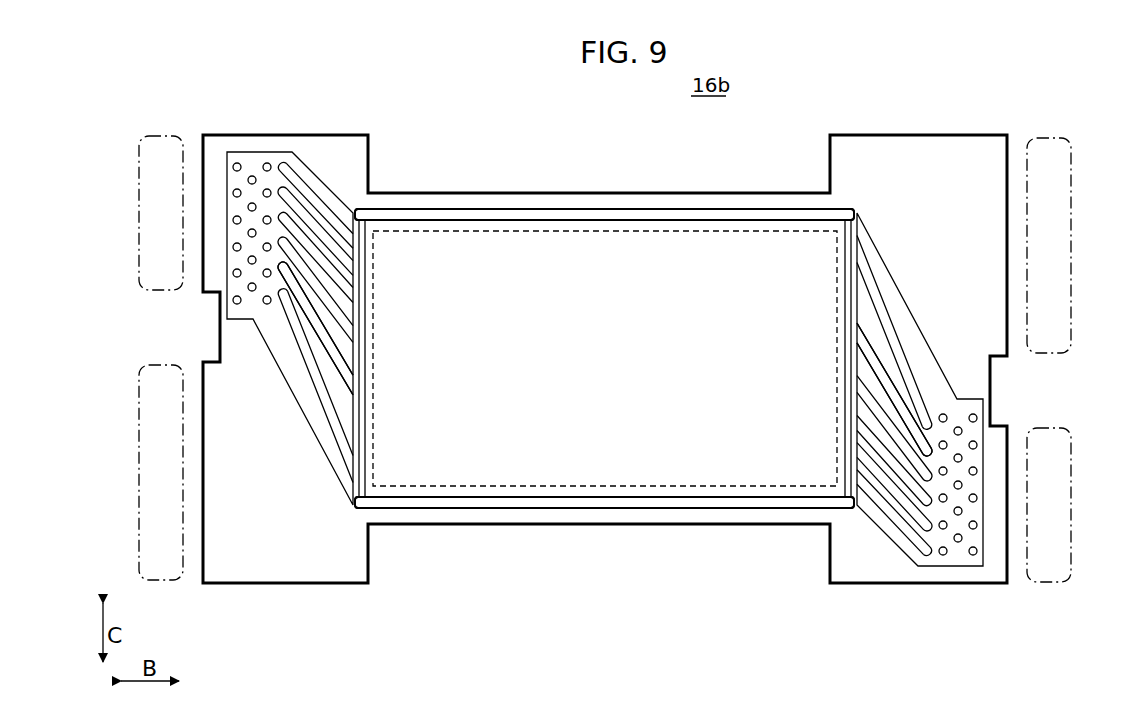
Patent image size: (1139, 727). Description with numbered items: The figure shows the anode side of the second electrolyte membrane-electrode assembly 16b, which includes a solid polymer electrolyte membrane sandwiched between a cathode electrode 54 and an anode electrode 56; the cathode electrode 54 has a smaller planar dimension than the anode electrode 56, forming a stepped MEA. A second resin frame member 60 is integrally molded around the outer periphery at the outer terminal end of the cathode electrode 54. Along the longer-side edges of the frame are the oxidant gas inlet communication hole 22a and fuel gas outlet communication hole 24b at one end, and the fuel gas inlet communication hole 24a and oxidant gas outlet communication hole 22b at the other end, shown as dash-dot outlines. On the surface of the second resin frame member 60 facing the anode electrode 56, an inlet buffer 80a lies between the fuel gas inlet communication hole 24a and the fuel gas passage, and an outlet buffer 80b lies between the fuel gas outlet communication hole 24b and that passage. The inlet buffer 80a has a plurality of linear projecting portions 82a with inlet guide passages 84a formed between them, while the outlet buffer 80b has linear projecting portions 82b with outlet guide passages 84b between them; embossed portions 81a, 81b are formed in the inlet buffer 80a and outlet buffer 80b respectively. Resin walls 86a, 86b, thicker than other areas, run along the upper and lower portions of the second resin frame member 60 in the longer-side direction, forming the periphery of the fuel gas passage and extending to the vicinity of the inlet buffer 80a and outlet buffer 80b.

The second electrolyte membrane-electrode assembly 16b is at (711, 85).
The second resin frame member 60 is at (854, 132).
The anode electrode 56 is at (488, 252).
The cathode electrode 54 is at (550, 250).
The resin wall 86a is at (675, 218).
The resin wall 86b is at (578, 509).
The inlet buffer 80a is at (323, 158).
The outlet buffer 80b is at (888, 557).
The embossed portions 81a is at (234, 302).
The embossed portions 81b is at (976, 416).
The linear projecting portions 82a is at (332, 413).
The linear projecting portions 82b is at (875, 300).
The inlet guide passages 84a is at (337, 383).
The outlet guide passages 84b is at (882, 348).
The fuel gas inlet communication hole 24a is at (150, 232).
The fuel gas outlet communication hole 24b is at (1060, 525).
The oxidant gas inlet communication hole 22a is at (1060, 232).
The oxidant gas outlet communication hole 22b is at (150, 525).